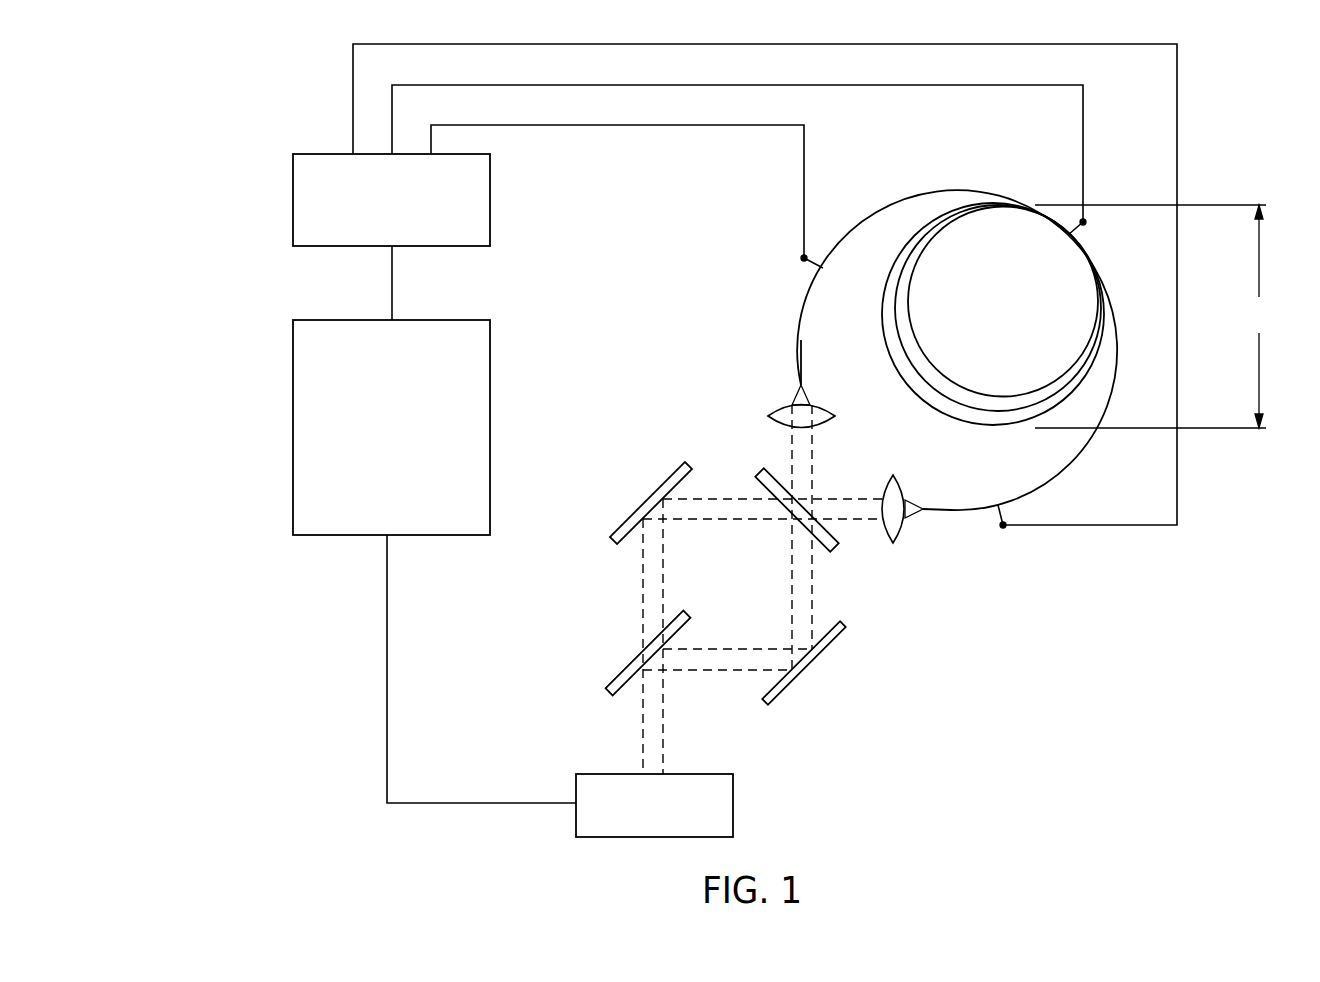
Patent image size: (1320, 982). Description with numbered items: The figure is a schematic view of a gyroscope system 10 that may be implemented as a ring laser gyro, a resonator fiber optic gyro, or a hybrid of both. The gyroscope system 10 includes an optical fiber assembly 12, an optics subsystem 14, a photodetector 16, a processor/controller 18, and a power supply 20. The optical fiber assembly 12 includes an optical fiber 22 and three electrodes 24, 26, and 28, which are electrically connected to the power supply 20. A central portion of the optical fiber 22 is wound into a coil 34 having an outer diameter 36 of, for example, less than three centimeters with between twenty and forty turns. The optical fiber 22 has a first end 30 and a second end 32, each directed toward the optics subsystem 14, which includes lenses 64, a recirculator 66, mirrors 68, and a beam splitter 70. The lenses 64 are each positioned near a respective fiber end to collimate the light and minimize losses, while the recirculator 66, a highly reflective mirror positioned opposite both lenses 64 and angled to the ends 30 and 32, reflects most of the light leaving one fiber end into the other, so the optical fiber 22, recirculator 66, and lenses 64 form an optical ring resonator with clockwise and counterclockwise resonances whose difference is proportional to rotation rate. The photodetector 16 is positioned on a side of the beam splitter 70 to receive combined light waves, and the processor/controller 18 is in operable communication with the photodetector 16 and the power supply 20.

The gyroscope system 10 is at (690, 440).
The optical fiber assembly 12 is at (815, 312).
The optics subsystem 14 is at (762, 553).
The photodetector 16 is at (654, 805).
The processor/controller 18 is at (391, 427).
The power supply 20 is at (391, 200).
The optical fiber 22 is at (804, 308).
The electrode 24 is at (1003, 525).
The electrode 26 is at (1083, 222).
The electrode 28 is at (804, 258).
The first end 30 is at (943, 509).
The second end 32 is at (802, 365).
The coil 34 is at (1005, 208).
The outer diameter 36 is at (1156, 316).
The lenses 64 is at (783, 410).
The recirculator 66 is at (760, 472).
The mirrors 68 is at (652, 502).
The beam splitter 70 is at (628, 668).